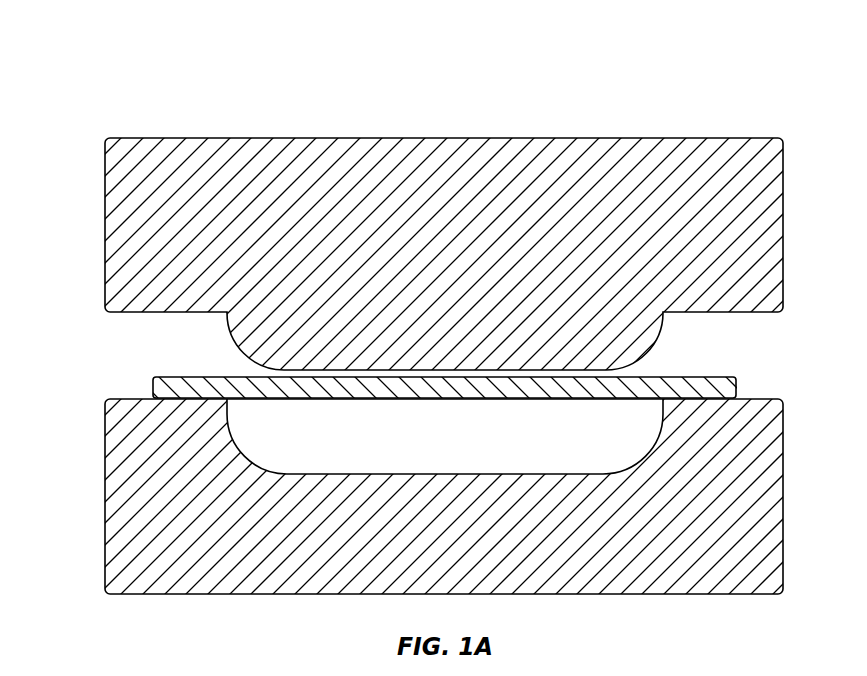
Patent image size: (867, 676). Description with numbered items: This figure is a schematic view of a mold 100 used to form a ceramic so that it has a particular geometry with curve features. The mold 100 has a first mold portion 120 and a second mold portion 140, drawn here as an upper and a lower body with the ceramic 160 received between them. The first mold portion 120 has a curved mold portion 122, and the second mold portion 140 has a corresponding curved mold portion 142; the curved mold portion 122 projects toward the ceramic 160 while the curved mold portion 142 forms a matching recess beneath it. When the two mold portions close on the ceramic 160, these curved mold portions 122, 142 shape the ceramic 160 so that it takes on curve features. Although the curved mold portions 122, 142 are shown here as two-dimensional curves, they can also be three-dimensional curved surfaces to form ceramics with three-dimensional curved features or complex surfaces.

The mold 100 is at (433, 307).
The first mold portion 120 is at (398, 230).
The curved mold portion 122 is at (210, 323).
The second mold portion 140 is at (402, 543).
The curved mold portion 142 is at (216, 422).
The ceramic 160 is at (152, 388).